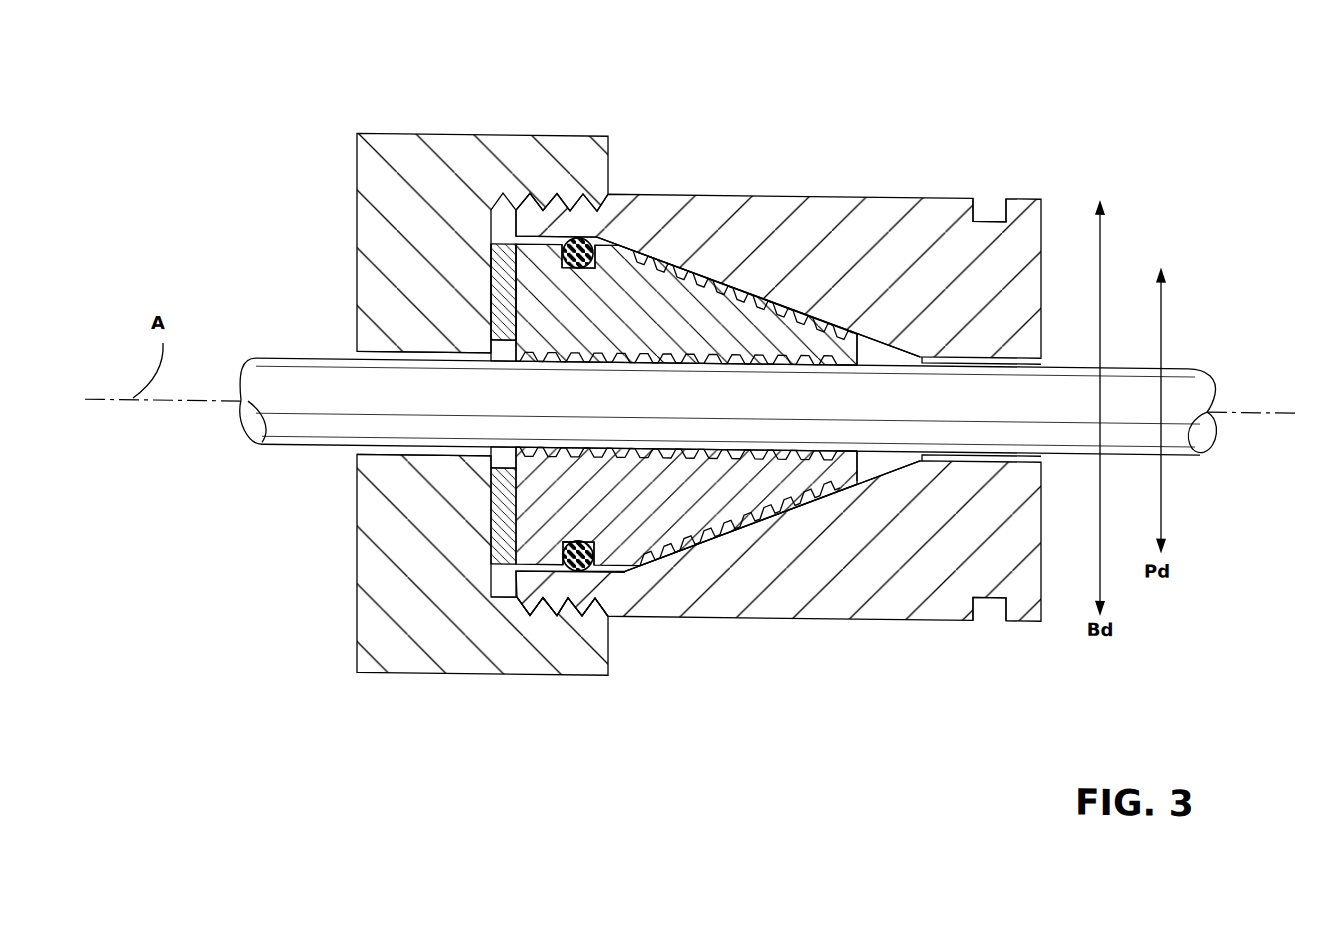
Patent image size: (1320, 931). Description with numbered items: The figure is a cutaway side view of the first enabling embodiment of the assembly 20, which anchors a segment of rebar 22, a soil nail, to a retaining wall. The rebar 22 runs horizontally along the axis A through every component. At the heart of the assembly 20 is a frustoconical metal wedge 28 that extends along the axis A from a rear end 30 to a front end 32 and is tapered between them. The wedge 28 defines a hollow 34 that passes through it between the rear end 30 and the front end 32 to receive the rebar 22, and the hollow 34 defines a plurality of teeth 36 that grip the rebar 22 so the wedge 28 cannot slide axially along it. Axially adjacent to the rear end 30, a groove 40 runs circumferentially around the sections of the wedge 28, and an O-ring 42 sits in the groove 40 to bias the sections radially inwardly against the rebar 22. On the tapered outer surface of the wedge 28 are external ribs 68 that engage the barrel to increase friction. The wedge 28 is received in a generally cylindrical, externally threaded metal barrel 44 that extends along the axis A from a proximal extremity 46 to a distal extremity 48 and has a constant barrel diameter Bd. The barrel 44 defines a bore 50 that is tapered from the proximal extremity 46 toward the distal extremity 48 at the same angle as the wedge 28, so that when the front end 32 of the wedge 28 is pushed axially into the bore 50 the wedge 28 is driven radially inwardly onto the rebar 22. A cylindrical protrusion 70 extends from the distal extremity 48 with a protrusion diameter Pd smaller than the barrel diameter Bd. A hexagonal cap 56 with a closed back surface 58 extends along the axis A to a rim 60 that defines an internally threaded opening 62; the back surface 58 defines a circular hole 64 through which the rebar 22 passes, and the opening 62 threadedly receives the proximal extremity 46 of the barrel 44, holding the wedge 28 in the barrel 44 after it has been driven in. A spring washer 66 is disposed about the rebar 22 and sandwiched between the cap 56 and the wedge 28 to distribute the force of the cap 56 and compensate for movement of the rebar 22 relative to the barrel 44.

The assembly 20 is at (1216, 214).
The segment of rebar 22 is at (300, 434).
The wedge 28 is at (762, 281).
The rear end 30 is at (505, 315).
The front end 32 is at (858, 334).
The hollow 34 is at (703, 357).
The teeth 36 is at (790, 457).
The groove 40 is at (600, 587).
The O-ring 42 is at (598, 236).
The barrel 44 is at (853, 178).
The proximal extremity 46 is at (513, 594).
The distal extremity 48 is at (978, 200).
The bore 50 is at (838, 483).
The cap 56 is at (344, 131).
The back surface 58 is at (356, 630).
The rim 60 is at (580, 237).
The opening 62 is at (560, 601).
The hole 64 is at (383, 358).
The spring washer 66 is at (502, 273).
The external ribs 68 is at (780, 497).
The protrusion 70 is at (985, 579).